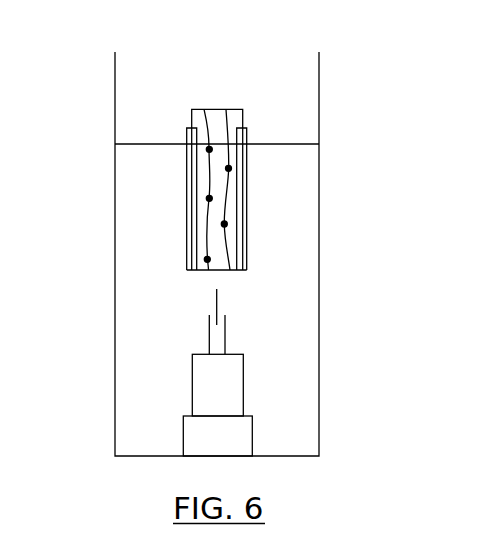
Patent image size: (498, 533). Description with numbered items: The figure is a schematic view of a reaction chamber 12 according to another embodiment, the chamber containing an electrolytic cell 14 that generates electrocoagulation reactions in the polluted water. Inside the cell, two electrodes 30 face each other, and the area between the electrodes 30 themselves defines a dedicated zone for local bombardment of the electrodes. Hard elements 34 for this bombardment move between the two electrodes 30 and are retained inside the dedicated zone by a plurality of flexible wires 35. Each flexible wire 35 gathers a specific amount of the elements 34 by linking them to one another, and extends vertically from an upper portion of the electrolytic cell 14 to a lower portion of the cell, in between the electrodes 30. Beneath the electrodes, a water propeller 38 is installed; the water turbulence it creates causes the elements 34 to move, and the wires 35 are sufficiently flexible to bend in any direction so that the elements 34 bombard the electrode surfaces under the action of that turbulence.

The reaction chamber 12 is at (319, 305).
The electrolytic cell 14 is at (204, 108).
The electrodes 30 is at (248, 198).
The hard elements 34 is at (206, 196).
The flexible wires 35 is at (226, 246).
The water propeller 38 is at (192, 385).